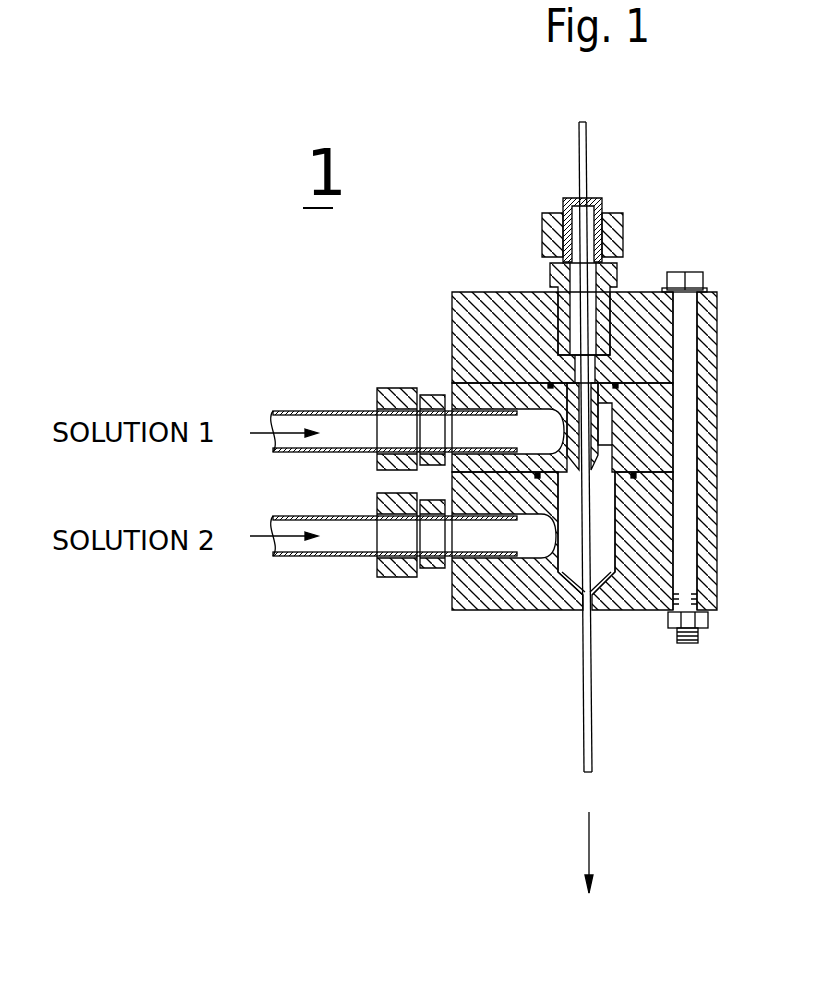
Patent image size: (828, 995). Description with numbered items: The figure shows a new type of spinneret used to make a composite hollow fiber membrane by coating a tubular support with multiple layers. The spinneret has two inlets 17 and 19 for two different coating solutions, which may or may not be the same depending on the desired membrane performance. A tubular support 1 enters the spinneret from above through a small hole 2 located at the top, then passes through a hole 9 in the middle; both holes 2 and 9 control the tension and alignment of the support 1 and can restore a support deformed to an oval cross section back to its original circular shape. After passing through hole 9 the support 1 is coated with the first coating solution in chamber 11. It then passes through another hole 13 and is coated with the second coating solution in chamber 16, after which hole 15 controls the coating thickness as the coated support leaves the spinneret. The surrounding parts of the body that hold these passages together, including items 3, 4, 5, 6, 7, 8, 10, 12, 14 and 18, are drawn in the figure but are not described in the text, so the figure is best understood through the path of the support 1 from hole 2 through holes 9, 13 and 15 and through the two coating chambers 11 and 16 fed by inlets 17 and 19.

The tubular support 1 is at (585, 122).
The small hole 2 is at (596, 199).
The compression nut 3 is at (615, 232).
The fitting 4 is at (610, 273).
The bolt 5 is at (693, 277).
The upper block 6 is at (710, 330).
The seal 7 is at (617, 385).
The capillary sleeve 8 is at (594, 430).
The hole 9 is at (614, 457).
The clamp plate 10 is at (715, 458).
The chamber 11 is at (602, 510).
The lower block 12 is at (625, 557).
The hole 13 is at (597, 585).
The plate 14 is at (713, 587).
The hole 15 is at (593, 612).
The chamber 16 is at (563, 583).
The inlet 17 is at (355, 558).
The inlet passage 18 is at (535, 480).
The inlet 19 is at (340, 398).